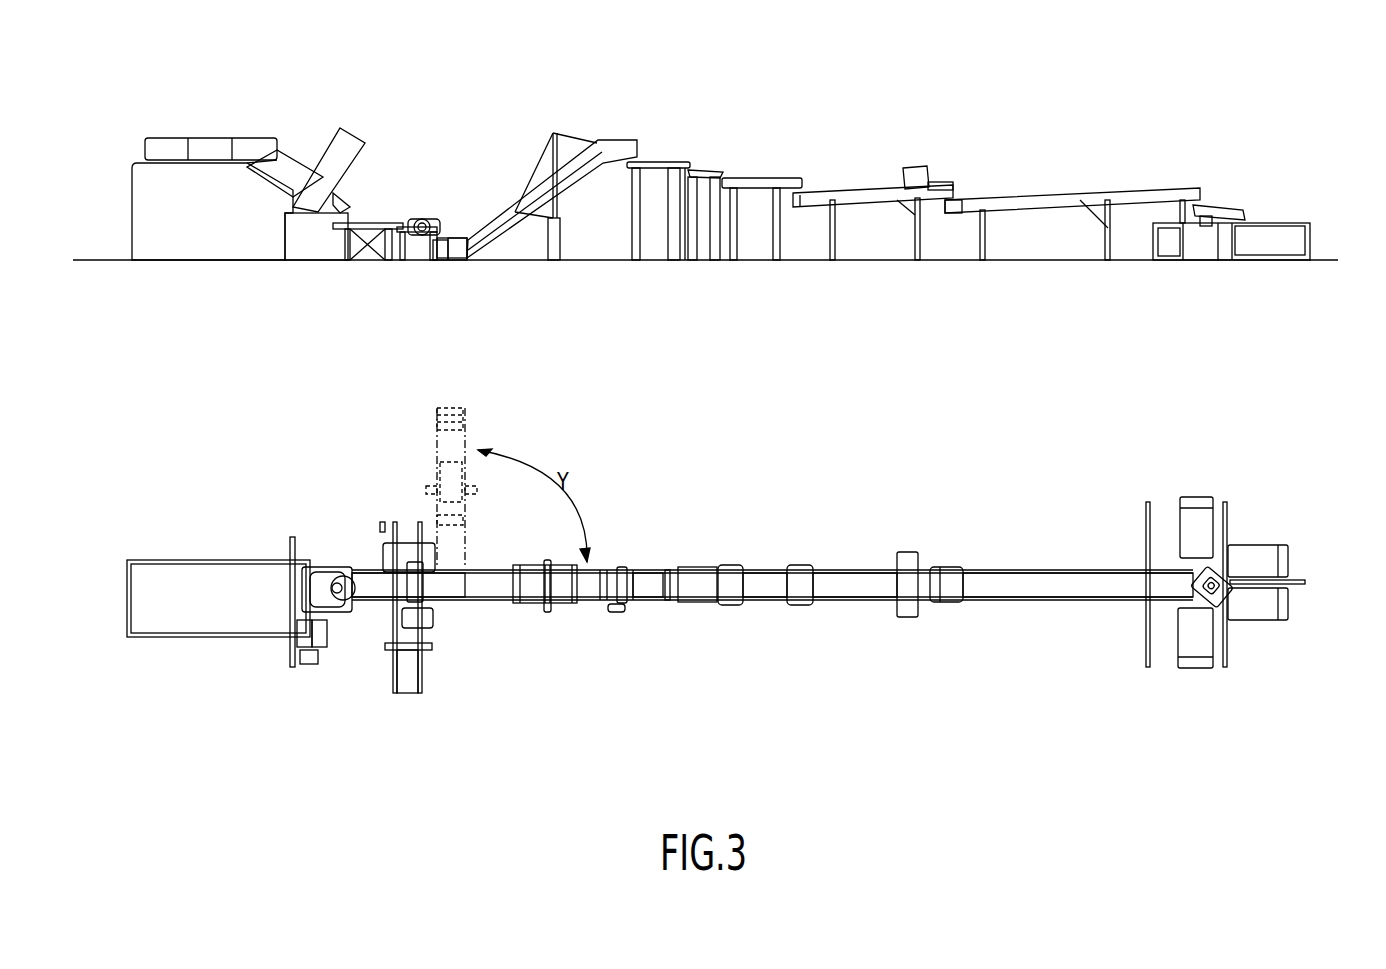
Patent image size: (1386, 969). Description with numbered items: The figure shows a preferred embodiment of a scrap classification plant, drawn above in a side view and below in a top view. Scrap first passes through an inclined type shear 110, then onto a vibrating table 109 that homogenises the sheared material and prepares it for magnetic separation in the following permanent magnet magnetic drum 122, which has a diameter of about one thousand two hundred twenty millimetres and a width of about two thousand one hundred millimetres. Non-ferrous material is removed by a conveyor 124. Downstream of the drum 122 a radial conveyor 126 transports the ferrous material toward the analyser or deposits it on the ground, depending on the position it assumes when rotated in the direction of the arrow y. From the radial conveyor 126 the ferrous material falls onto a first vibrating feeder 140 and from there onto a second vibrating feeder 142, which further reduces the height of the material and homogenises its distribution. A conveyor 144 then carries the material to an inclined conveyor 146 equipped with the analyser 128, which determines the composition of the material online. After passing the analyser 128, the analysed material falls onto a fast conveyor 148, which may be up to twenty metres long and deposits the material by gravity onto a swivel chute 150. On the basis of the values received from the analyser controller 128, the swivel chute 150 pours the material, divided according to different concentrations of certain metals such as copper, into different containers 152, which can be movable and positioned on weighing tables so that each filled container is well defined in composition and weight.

The vibrating table 109 is at (358, 250).
The inclined type shear 110 is at (184, 215).
The permanent magnet magnetic drum 122 is at (412, 225).
The conveyor 124 is at (405, 672).
The radial conveyor 126 is at (512, 205).
The analyser 128 is at (910, 170).
The first vibrating feeder 140 is at (658, 160).
The second vibrating feeder 142 is at (700, 170).
The conveyor 144 is at (767, 180).
The inclined conveyor 146 is at (868, 195).
The fast conveyor 148 is at (1043, 200).
The swivel chute 150 is at (1218, 205).
The containers 152 is at (1193, 538).